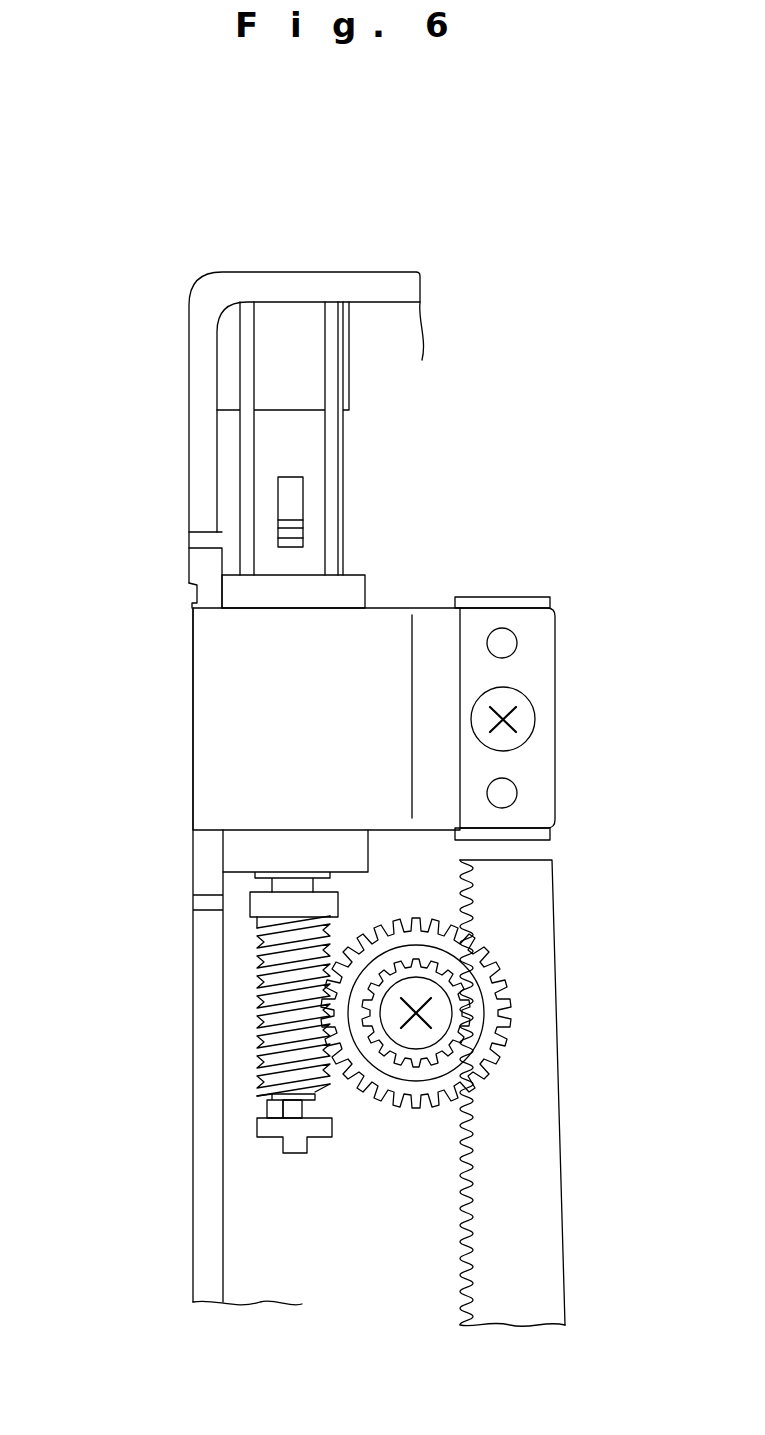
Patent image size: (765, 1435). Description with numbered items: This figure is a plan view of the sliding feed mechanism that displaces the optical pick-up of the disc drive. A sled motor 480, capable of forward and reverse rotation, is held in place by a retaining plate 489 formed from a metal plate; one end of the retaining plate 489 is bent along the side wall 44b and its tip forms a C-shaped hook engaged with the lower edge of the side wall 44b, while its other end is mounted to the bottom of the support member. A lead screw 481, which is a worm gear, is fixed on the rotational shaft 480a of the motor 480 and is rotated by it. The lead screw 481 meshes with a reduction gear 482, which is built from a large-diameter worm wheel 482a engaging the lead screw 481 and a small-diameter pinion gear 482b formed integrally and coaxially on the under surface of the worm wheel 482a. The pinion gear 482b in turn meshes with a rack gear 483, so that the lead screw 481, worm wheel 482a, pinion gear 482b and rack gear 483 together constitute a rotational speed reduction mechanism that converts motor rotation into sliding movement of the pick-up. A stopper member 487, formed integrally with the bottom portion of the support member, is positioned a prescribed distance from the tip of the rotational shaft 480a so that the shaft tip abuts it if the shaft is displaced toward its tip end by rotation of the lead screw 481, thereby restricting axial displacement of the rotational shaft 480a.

The side wall 44b is at (190, 587).
The motor 480 is at (367, 583).
The retaining plate 489 is at (223, 705).
The lead screw 481 is at (287, 973).
The rotational shaft 480a is at (267, 1111).
The stopper member 487 is at (272, 1135).
The reduction gear 482 is at (395, 917).
The worm wheel 482a is at (395, 1110).
The pinion gear 482b is at (455, 1058).
The rack gear 483 is at (550, 1280).